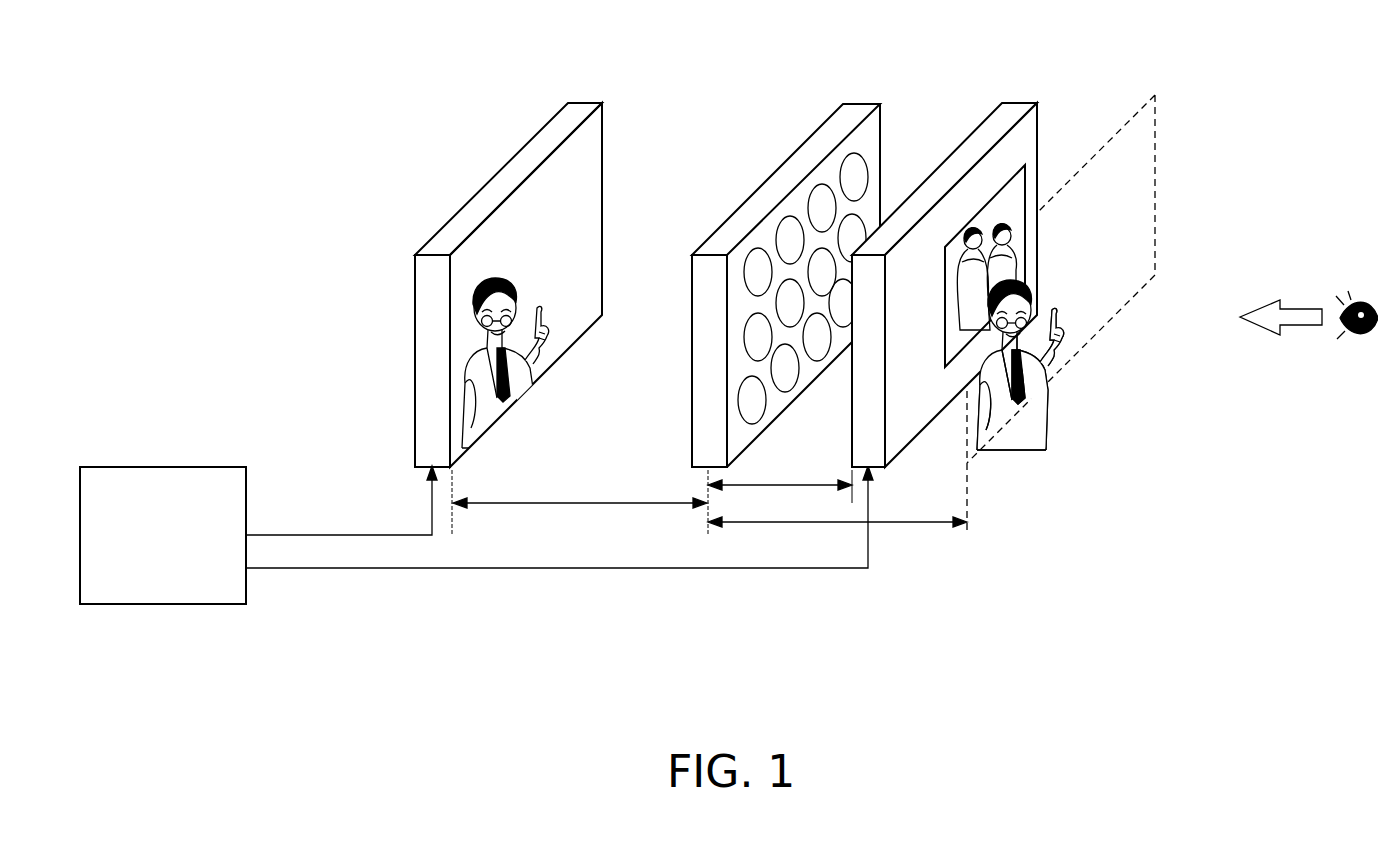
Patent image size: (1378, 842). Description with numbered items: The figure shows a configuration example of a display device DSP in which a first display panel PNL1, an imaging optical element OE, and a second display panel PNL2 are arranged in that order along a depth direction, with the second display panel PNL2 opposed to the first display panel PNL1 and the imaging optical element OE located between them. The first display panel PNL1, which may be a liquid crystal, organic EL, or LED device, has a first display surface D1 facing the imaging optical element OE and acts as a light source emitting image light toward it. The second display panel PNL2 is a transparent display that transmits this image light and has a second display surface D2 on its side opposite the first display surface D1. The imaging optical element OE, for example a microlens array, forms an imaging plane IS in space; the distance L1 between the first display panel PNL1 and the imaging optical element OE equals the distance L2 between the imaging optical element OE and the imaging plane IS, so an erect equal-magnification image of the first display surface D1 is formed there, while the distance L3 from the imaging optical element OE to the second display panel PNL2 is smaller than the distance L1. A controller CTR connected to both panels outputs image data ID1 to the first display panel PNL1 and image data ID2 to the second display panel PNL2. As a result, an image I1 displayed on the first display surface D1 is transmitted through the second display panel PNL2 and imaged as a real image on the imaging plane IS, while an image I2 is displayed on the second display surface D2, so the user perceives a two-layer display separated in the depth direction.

The display device DSP is at (1102, 622).
The controller CTR is at (161, 467).
The first display panel PNL1 is at (578, 103).
The second display panel PNL2 is at (1014, 104).
The imaging optical element OE is at (853, 104).
The imaging plane IS is at (1157, 93).
The first display surface D1 is at (610, 148).
The second display surface D2 is at (1045, 148).
The image I1 is at (505, 408).
The image I2 is at (1000, 203).
The image data ID1 is at (341, 500).
The image data ID2 is at (559, 517).
The distance L1 is at (580, 502).
The distance L2 is at (837, 512).
The distance L3 is at (780, 482).